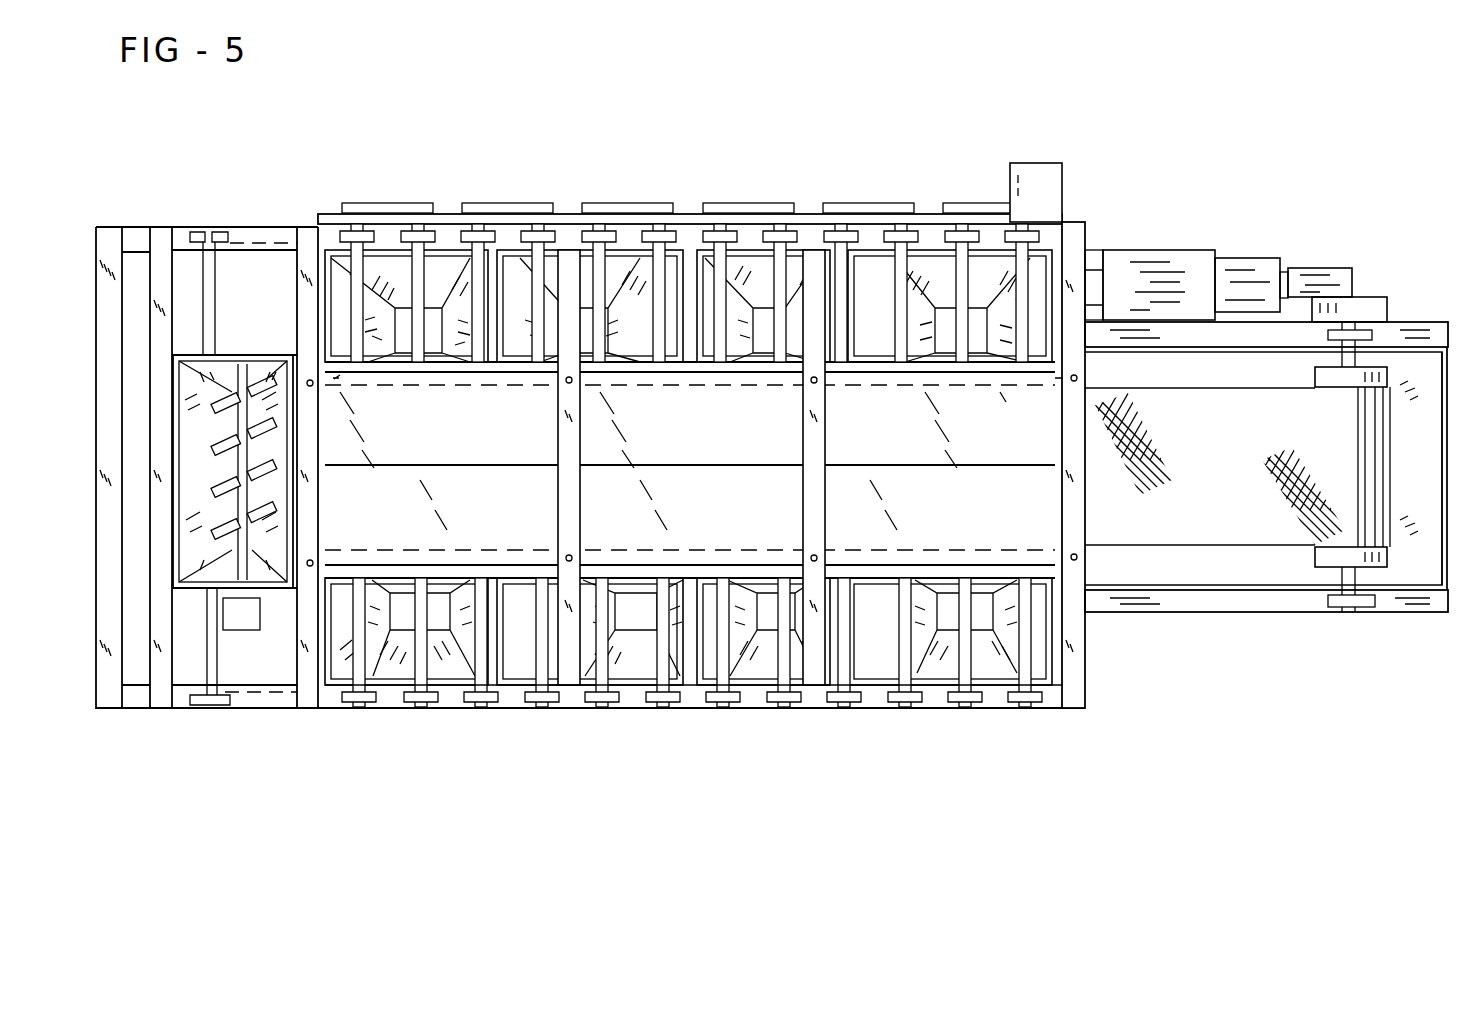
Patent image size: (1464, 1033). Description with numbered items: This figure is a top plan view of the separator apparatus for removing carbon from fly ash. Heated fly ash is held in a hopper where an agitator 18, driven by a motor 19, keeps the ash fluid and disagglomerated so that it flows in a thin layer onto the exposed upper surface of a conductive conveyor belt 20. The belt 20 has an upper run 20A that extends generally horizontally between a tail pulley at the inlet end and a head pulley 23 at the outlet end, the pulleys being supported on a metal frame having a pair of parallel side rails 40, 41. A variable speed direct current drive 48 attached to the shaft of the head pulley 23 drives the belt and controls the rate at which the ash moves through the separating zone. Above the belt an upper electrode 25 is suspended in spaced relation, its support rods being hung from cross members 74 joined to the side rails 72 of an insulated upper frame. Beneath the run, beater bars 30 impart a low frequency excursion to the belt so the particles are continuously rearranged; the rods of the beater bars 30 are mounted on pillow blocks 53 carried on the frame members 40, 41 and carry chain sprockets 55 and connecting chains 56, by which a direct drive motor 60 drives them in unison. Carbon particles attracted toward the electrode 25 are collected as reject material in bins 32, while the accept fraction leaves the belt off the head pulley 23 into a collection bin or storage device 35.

The agitator 18 is at (240, 548).
The motor 19 is at (237, 630).
The conveyor belt 20 is at (1180, 528).
The upper run 20A is at (1240, 493).
The head pulley 23 is at (1364, 377).
The upper electrode 25 is at (890, 435).
The beater bars 30 is at (780, 270).
The bins 32 is at (925, 262).
The collection bin or storage device 35 is at (1448, 582).
The side rail 40 is at (1267, 600).
The side rail 41 is at (1200, 333).
The variable speed direct current drive 48 is at (1247, 262).
The pillow blocks 53 is at (408, 238).
The chain sprockets 55 is at (637, 203).
The connecting chains 56 is at (505, 205).
The direct drive motor 60 is at (1042, 163).
The side rails 72 is at (758, 698).
The cross members 74 is at (1070, 438).